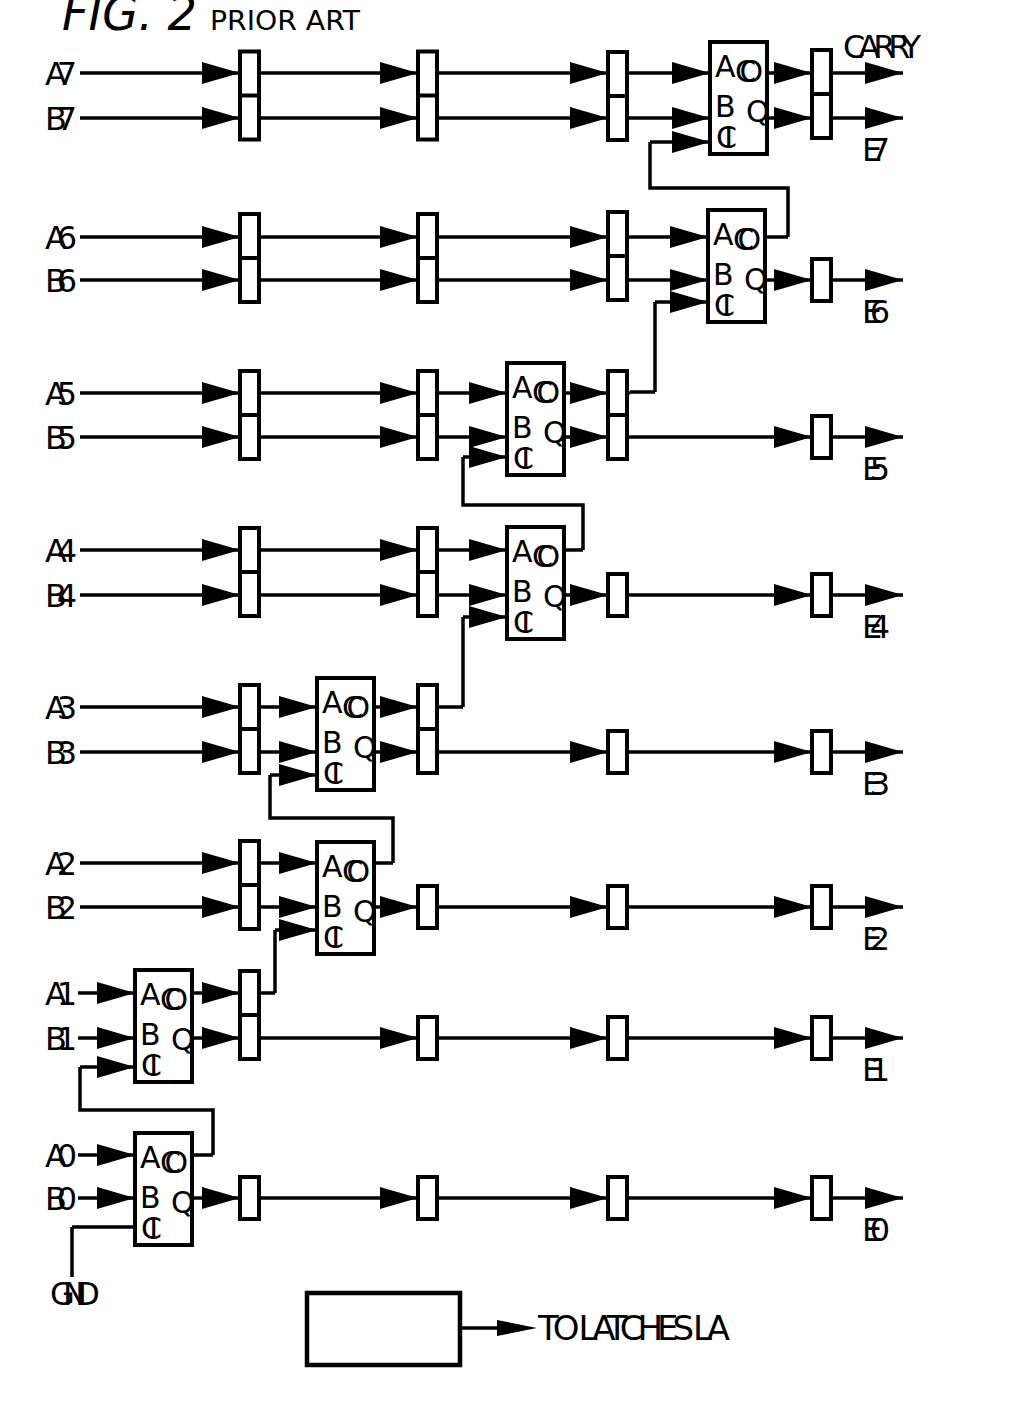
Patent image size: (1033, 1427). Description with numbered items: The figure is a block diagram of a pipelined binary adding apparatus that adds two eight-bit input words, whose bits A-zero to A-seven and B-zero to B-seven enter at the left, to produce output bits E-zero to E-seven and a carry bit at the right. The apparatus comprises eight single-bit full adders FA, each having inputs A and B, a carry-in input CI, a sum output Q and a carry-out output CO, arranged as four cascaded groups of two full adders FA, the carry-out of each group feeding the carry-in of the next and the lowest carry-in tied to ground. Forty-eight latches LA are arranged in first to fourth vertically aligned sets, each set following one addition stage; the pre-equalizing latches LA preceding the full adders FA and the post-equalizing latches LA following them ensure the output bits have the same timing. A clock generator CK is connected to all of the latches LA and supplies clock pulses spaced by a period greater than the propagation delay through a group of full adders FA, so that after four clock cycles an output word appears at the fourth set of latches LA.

The latch LA is at (828, 1196).
The full adder FA is at (752, 140).
The clock generator CK is at (383, 1329).